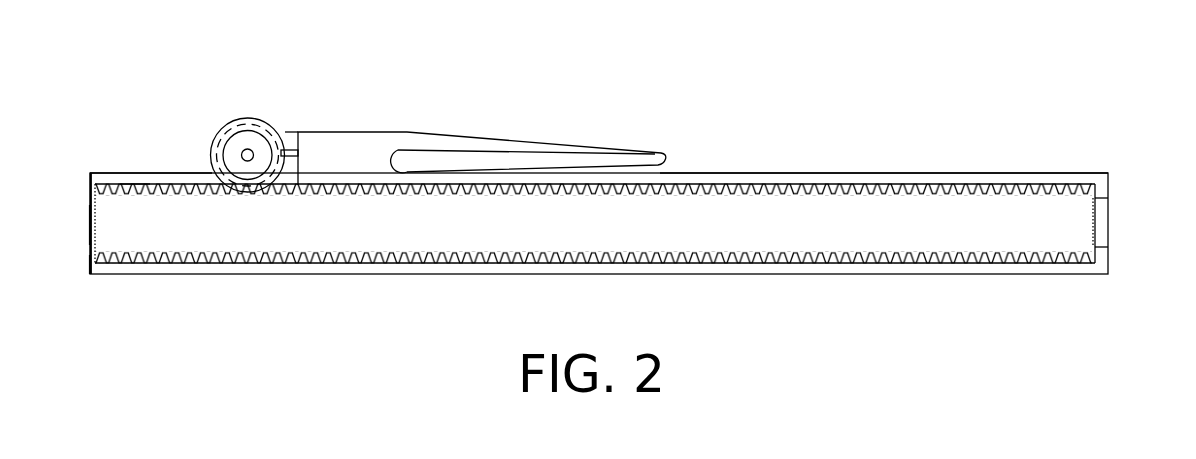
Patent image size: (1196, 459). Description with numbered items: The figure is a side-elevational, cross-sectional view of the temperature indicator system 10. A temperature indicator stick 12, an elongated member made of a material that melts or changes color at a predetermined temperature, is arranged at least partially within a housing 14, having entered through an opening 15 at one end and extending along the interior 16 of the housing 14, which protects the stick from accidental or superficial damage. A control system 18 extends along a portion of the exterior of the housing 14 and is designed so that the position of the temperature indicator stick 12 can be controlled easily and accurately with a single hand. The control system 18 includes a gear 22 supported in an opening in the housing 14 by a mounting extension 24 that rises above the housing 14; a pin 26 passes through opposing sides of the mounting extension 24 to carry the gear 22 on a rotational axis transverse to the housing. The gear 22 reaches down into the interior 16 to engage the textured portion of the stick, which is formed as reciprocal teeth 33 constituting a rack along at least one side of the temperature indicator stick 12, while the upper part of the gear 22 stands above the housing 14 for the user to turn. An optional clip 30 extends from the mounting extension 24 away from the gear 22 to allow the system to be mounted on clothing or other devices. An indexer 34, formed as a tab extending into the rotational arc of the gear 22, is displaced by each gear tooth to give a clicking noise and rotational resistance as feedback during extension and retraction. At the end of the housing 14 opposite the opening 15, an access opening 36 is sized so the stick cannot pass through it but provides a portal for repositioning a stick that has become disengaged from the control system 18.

The temperature indicator system 10 is at (966, 80).
The temperature indicator stick 12 is at (656, 232).
The housing 14 is at (880, 274).
The opening 15 is at (62, 226).
The interior 16 is at (75, 260).
The control system 18 is at (299, 65).
The gear 22 is at (248, 117).
The mounting extension 24 is at (354, 170).
The pin 26 is at (243, 153).
The clip 30 is at (530, 148).
The reciprocal teeth 33 is at (131, 166).
The indexer 34 is at (298, 150).
The access opening 36 is at (1130, 221).